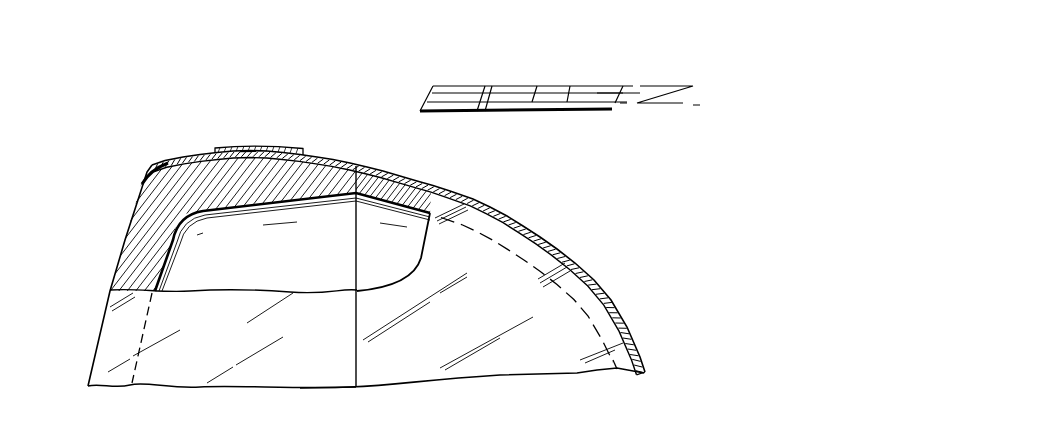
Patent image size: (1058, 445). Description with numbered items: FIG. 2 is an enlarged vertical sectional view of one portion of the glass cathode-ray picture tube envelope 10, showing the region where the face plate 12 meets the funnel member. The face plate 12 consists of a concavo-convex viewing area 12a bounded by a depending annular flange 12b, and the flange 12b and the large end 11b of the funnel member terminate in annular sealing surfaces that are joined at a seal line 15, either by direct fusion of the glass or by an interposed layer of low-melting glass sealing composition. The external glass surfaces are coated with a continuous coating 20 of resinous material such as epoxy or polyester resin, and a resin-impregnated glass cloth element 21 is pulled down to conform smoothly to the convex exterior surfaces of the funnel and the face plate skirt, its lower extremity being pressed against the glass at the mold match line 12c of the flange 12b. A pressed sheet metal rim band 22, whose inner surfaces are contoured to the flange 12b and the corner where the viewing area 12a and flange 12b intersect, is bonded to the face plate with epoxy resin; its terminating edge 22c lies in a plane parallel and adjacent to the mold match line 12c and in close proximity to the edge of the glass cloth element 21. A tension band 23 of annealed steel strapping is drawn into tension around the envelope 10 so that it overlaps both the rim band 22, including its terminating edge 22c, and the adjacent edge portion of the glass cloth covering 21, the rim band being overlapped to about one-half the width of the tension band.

The tube envelope 10 is at (652, 323).
The large end of funnel member 11b is at (517, 237).
The face plate member 12 is at (100, 320).
The viewing area 12a is at (140, 227).
The face plate flange 12b is at (192, 180).
The mold match line 12c is at (243, 150).
The seal line 15 is at (358, 370).
The coating 20 is at (168, 162).
The glass cloth element 21 is at (592, 271).
The rim band 22 is at (150, 176).
The terminating edge of rim band 22c is at (247, 152).
The tension band 23 is at (280, 148).